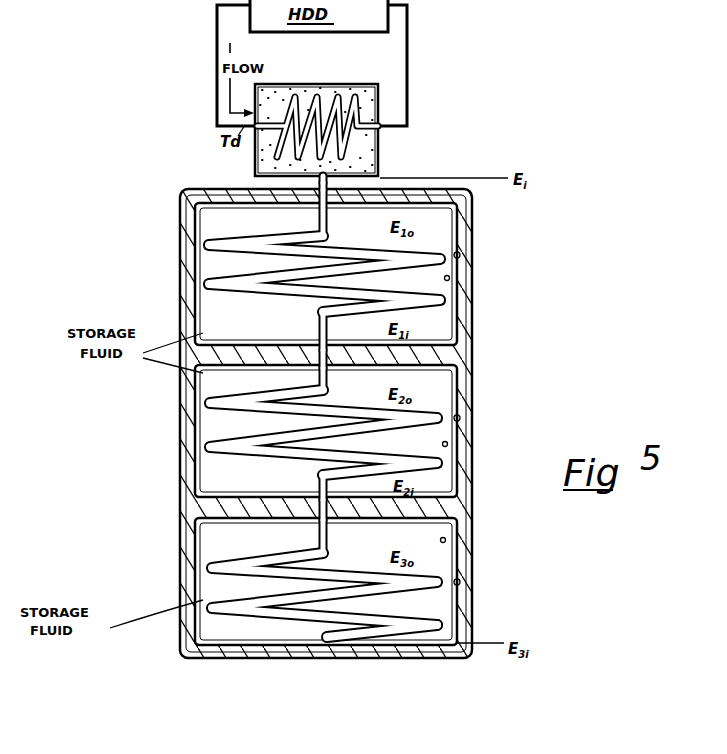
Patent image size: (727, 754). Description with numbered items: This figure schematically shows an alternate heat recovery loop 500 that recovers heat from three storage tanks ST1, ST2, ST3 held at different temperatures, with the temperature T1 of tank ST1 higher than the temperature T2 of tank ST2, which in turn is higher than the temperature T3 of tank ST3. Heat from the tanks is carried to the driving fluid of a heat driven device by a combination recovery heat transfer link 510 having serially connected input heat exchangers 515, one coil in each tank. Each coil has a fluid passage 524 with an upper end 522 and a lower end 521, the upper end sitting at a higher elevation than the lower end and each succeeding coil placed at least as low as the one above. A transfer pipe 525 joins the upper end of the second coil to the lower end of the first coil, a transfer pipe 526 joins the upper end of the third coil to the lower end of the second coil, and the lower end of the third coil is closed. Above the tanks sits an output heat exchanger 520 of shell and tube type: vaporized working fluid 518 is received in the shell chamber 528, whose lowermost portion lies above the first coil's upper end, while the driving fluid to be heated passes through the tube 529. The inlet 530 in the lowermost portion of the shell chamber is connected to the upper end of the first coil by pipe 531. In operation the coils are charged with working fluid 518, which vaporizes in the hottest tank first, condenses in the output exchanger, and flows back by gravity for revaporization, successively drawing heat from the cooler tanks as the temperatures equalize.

The heat recovery loop 500 is at (125, 188).
The recovery heat transfer link 510 is at (220, 158).
The input heat exchangers 515 is at (445, 258).
The working fluid 518 is at (383, 153).
The output heat exchanger 520 is at (324, 62).
The lower end 521 is at (318, 318).
The upper end 522 is at (318, 228).
The fluid passage 524 is at (272, 272).
The transfer pipe 525 is at (328, 325).
The transfer pipe 526 is at (329, 540).
The shell chamber 528 is at (372, 143).
The tube 529 is at (335, 92).
The inlet 530 is at (328, 170).
The pipe 531 is at (312, 182).
The temperature of tank ST1 T1 is at (450, 278).
The temperature of tank ST2 T2 is at (448, 444).
The temperature of tank ST3 T3 is at (447, 540).
The storage tank ST1 is at (182, 282).
The storage tank ST2 is at (182, 437).
The storage tank ST3 is at (182, 580).